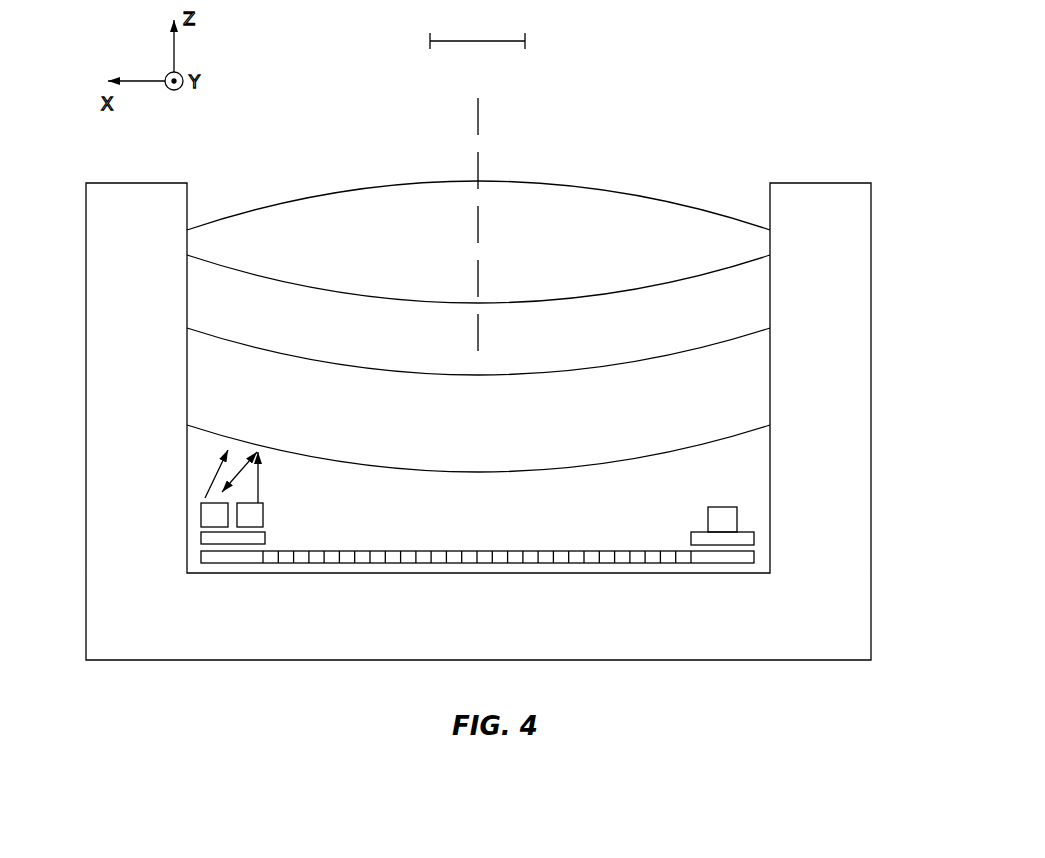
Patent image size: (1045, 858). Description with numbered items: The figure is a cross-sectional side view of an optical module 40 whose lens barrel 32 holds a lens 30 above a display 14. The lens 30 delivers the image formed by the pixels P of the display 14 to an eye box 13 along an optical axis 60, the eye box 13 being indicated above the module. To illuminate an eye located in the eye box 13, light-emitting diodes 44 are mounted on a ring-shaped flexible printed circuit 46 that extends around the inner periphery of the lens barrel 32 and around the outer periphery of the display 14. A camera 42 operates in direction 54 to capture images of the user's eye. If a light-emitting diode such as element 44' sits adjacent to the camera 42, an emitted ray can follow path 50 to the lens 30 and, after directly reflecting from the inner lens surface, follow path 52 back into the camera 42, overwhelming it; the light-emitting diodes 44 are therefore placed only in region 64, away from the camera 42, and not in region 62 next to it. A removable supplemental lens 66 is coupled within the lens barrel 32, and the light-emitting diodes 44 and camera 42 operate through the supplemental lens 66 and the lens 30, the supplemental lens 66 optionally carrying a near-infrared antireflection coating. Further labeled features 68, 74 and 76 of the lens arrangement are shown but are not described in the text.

The eye box 13 is at (525, 41).
The display 14 is at (644, 549).
The lens 30 is at (688, 354).
The lens barrel 32 is at (853, 603).
The optical module 40 is at (488, 379).
The camera 42 is at (208, 518).
The light-emitting diodes 44 is at (812, 506).
The light detector 44' is at (285, 518).
The flexible printed circuit 46 is at (208, 540).
The path 50 is at (258, 483).
The path 52 is at (244, 470).
The direction 54 is at (206, 489).
The optical axis 60 is at (478, 160).
The region 62 is at (360, 583).
The region 64 is at (783, 583).
The supplemental lens 66 is at (333, 206).
The lens element 68 is at (752, 299).
The lens surface 74 is at (745, 440).
The lens assembly 76 is at (555, 297).
The pixels P is at (477, 551).